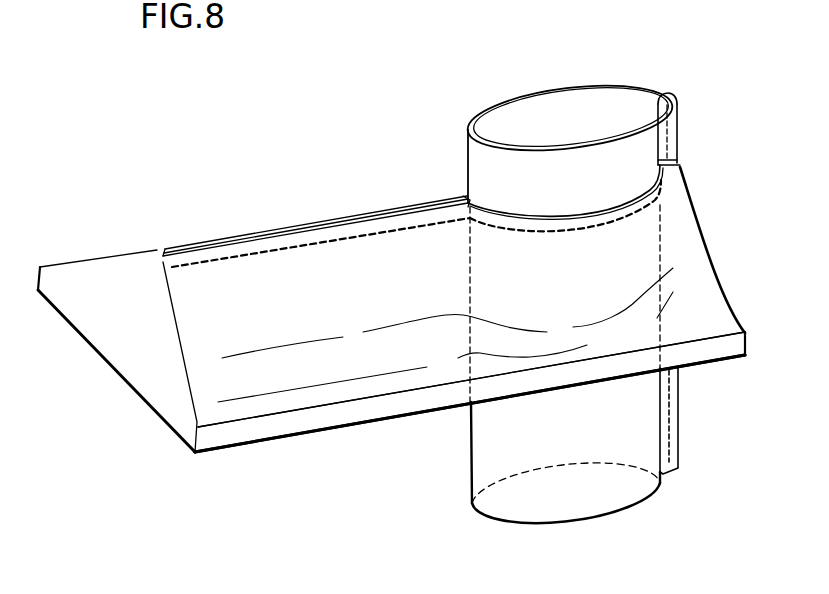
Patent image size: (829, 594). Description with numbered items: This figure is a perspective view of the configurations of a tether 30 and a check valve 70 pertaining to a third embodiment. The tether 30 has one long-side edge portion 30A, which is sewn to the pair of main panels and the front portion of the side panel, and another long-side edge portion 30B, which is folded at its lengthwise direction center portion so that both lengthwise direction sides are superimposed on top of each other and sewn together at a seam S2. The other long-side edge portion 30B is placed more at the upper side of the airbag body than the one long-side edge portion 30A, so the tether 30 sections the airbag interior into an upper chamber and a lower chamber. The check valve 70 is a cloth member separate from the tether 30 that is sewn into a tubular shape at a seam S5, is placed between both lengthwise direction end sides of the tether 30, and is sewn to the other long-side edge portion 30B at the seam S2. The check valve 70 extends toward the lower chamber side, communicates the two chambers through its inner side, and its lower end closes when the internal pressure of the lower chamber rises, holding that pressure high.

The tether 30 is at (132, 395).
The one long-side edge portion 30A is at (331, 430).
The other long-side edge portion 30B is at (298, 222).
The seam S2 is at (363, 236).
The check valve 70 is at (537, 88).
The seam S5 is at (672, 425).